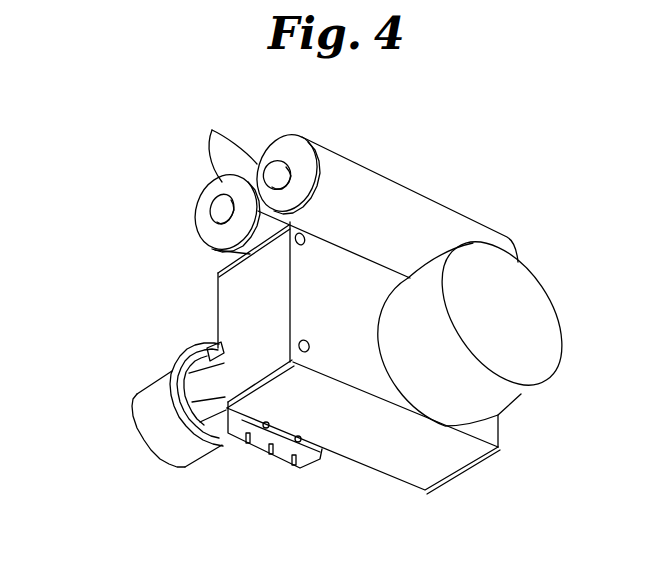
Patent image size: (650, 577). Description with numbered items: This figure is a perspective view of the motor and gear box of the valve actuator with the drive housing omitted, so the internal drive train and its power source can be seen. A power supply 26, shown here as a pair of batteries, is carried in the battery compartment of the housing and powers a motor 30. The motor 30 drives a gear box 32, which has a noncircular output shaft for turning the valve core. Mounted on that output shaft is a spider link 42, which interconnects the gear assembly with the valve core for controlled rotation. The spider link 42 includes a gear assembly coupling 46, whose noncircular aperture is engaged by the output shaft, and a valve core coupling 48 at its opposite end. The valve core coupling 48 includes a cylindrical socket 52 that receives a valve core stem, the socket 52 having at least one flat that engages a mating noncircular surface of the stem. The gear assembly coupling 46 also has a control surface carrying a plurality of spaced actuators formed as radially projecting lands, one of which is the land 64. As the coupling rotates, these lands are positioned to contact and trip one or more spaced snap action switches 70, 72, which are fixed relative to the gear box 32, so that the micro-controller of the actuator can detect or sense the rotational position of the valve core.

The power supply 26 is at (212, 130).
The motor 30 is at (500, 390).
The gear box 32 is at (440, 455).
The spider link 42 is at (156, 378).
The gear assembly coupling 46 is at (220, 340).
The valve core coupling 48 is at (182, 452).
The cylindrical socket 52 is at (156, 408).
The land 64 is at (220, 348).
The snap action switch 70 is at (243, 440).
The snap action switch 72 is at (290, 462).